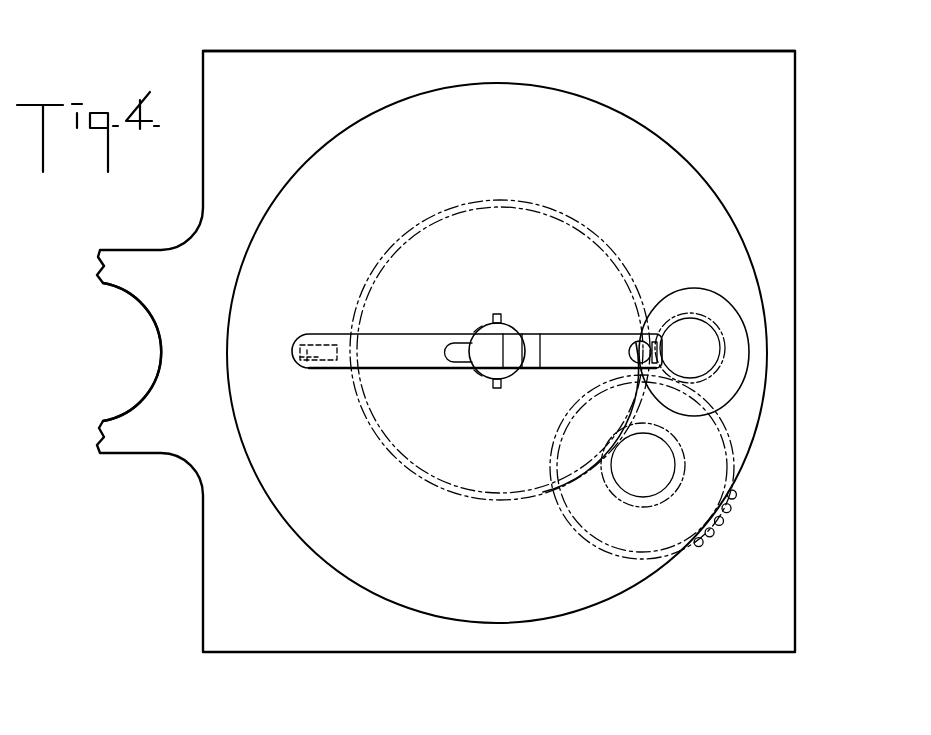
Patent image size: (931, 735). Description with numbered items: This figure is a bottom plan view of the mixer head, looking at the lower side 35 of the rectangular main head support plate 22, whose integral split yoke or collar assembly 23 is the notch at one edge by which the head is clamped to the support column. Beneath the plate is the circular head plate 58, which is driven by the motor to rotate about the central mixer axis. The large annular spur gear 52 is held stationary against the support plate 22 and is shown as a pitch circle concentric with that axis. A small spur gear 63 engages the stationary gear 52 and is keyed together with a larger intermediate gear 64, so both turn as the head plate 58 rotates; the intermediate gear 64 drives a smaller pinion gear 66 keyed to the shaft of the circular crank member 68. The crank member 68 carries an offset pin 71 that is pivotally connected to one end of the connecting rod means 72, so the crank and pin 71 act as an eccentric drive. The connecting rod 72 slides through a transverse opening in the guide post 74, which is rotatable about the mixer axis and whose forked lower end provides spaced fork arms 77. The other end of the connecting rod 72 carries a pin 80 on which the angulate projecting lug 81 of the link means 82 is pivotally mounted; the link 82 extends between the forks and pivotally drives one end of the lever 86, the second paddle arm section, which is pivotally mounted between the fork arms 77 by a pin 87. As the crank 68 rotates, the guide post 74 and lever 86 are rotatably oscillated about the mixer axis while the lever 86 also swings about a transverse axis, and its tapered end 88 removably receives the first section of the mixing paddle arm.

The main head support plate 22 is at (783, 155).
The lower side of the support plate 35 is at (320, 69).
The split yoke or collar assembly 23 is at (148, 440).
The circular head plate 58 is at (291, 513).
The large annular spur gear 52 is at (508, 500).
The link means 82 is at (390, 348).
The pin 80 is at (323, 340).
The angulate projecting lug 81 is at (305, 364).
The tapered end of the second paddle arm section 88 is at (472, 368).
The lever 86 is at (485, 347).
The guide post 74 is at (512, 322).
The pin 87 is at (498, 316).
The fork arms 77 is at (479, 324).
The connecting rod means 72 is at (562, 348).
The pin 71 is at (636, 347).
The circular crank member 68 is at (670, 292).
The pinion gear 66 is at (700, 315).
The intermediate gear 64 is at (719, 511).
The small spur gear 63 is at (620, 498).